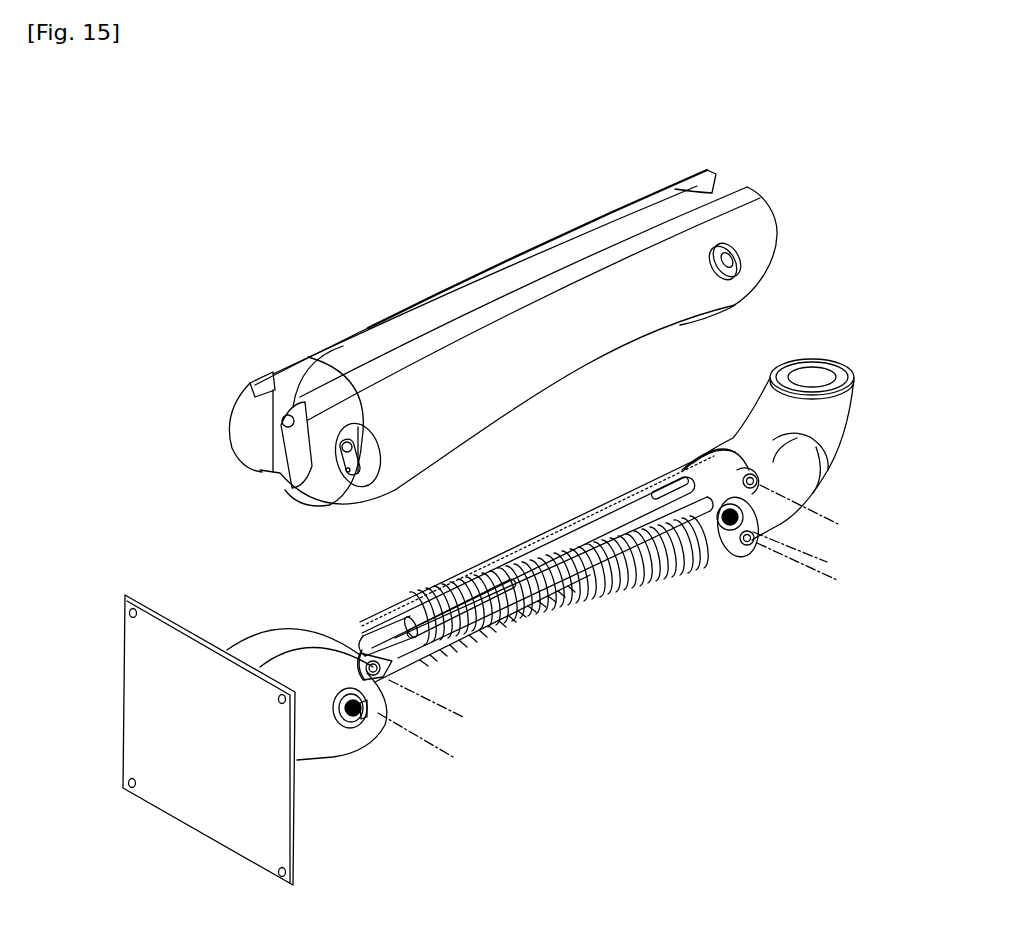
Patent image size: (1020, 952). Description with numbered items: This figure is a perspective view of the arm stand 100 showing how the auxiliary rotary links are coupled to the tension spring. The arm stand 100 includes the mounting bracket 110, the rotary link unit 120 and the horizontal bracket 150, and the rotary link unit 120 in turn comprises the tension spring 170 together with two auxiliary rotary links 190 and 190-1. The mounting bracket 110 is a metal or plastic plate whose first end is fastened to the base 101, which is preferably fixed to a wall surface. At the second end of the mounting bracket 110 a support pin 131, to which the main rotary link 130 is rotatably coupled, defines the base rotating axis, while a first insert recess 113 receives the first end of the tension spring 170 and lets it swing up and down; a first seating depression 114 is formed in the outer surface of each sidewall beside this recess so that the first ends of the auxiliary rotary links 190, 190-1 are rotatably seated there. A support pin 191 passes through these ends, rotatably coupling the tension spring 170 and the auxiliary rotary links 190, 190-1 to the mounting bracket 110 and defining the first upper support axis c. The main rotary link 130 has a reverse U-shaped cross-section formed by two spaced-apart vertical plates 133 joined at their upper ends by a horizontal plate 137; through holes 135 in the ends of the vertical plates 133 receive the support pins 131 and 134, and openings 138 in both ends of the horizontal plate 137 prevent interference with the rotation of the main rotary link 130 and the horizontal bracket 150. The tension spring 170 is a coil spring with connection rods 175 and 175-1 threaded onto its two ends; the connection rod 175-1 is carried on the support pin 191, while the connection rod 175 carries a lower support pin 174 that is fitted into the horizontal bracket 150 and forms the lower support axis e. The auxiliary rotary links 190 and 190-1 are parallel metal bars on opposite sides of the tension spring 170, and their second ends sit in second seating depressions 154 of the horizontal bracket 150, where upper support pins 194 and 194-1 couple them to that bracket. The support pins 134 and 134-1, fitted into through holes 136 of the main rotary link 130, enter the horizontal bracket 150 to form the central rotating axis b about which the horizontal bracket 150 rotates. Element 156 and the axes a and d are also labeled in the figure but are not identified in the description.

The arm stand 100 is at (452, 125).
The base 101 is at (147, 715).
The mounting bracket 110 is at (270, 642).
The first insert recess 113 is at (340, 633).
The first seating depression 114 is at (377, 700).
The rotary link unit 120 is at (412, 278).
The main rotary link 130 is at (505, 270).
The support pin 131 is at (358, 722).
The vertical plates 133 is at (233, 428).
The support pin 134 is at (735, 540).
The support pin 134-1 is at (672, 500).
The through holes 135 is at (350, 442).
The through holes 136 is at (738, 256).
The horizontal plate 137 is at (590, 232).
The openings 138 is at (680, 172).
The horizontal bracket 150 is at (755, 392).
The second seating depression 154 is at (837, 452).
The bore 156 is at (810, 375).
The tension spring 170 is at (608, 595).
The lower support pin 174 is at (752, 546).
The connection rod 175 is at (703, 550).
The connection rod 175-1 is at (395, 625).
The auxiliary rotary link 190 is at (523, 600).
The auxiliary rotary link 190-1 is at (525, 552).
The support pin 191 is at (392, 667).
The upper support pin 194 is at (763, 480).
The upper support pin 194-1 is at (715, 450).
The axis a is at (423, 746).
The central rotating axis b is at (796, 557).
The first upper support axis c is at (432, 707).
The axis d is at (808, 512).
The lower support axis e is at (804, 572).